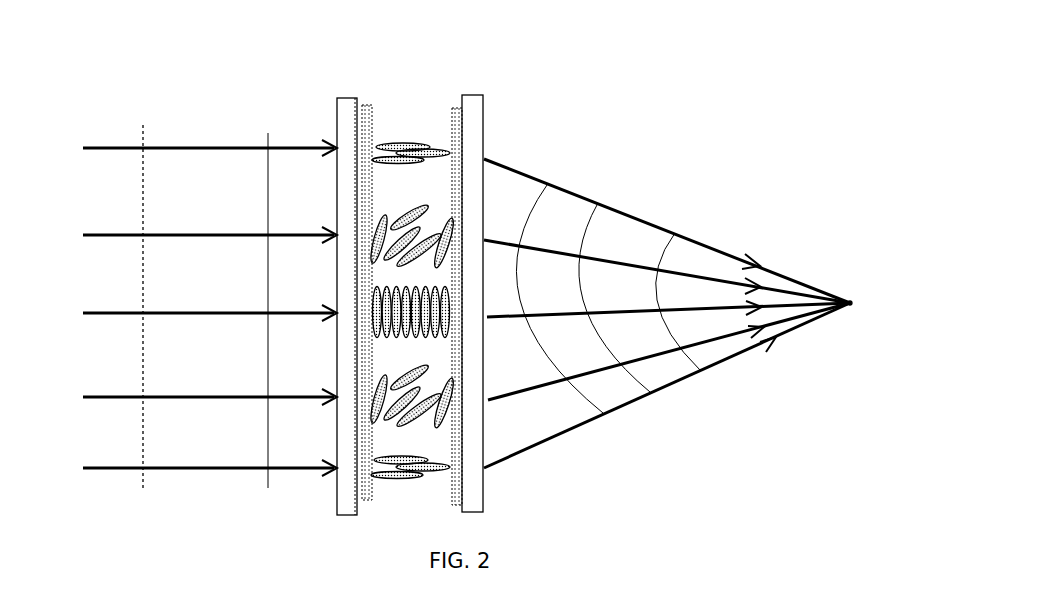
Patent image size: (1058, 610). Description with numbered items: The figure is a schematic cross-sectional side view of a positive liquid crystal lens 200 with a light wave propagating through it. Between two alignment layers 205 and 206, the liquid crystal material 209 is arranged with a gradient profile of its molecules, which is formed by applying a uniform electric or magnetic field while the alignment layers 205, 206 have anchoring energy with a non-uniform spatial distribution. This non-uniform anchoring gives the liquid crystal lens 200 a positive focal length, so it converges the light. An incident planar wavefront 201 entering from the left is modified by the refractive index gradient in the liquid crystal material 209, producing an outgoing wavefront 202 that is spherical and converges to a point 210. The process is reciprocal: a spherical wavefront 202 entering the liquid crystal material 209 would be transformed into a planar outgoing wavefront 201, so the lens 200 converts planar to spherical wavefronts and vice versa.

The positive liquid crystal lens 200 is at (498, 33).
The incident planar wavefront 201 is at (177, 147).
The outgoing spherical wavefront 202 is at (623, 213).
The alignment layer 205 is at (367, 163).
The alignment layer 206 is at (453, 108).
The liquid crystal material 209 is at (383, 132).
The convergence point 210 is at (850, 303).